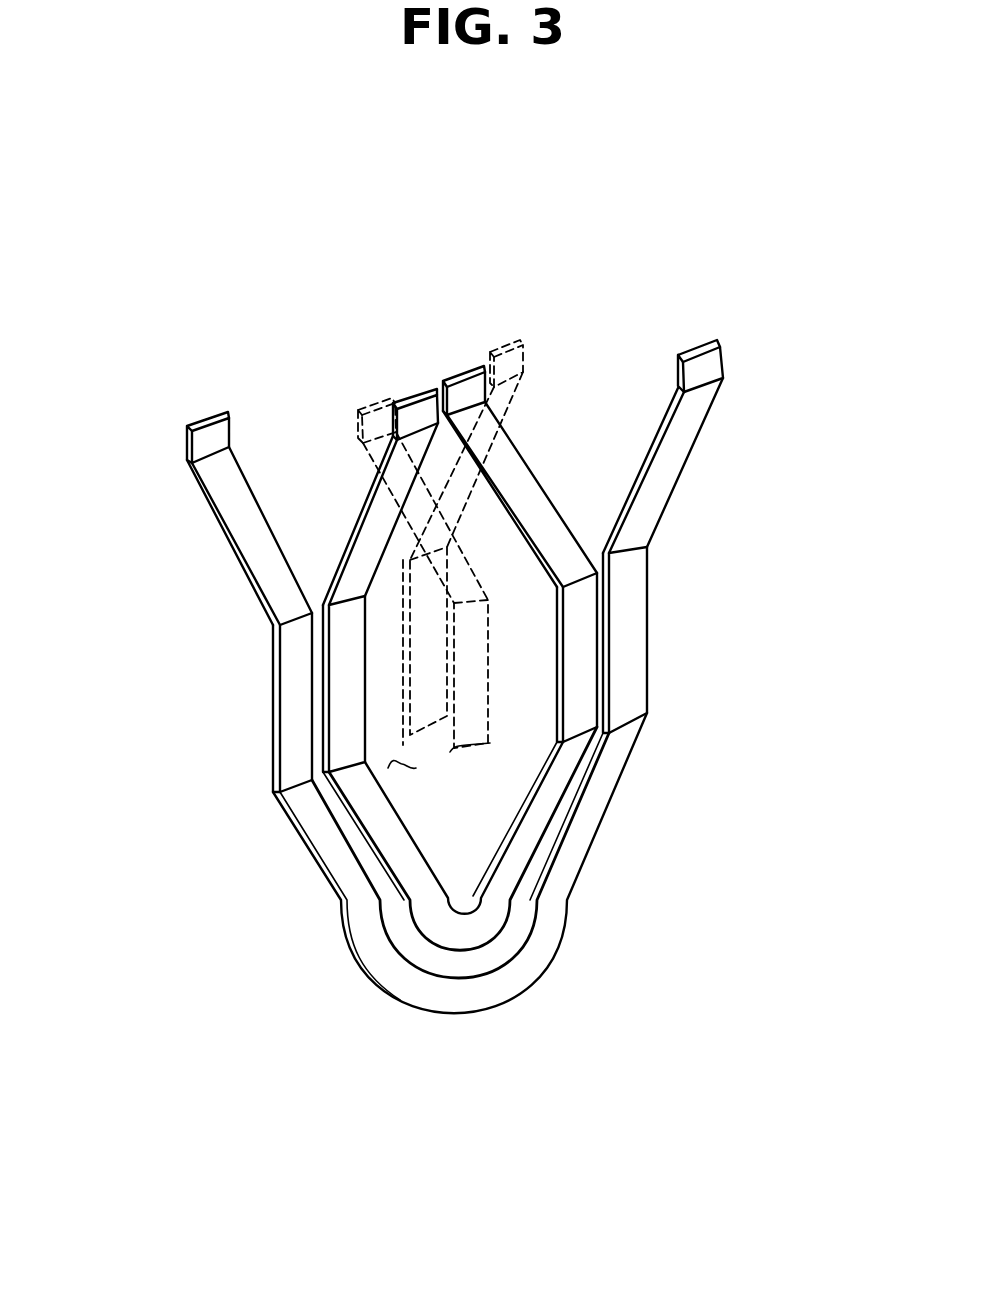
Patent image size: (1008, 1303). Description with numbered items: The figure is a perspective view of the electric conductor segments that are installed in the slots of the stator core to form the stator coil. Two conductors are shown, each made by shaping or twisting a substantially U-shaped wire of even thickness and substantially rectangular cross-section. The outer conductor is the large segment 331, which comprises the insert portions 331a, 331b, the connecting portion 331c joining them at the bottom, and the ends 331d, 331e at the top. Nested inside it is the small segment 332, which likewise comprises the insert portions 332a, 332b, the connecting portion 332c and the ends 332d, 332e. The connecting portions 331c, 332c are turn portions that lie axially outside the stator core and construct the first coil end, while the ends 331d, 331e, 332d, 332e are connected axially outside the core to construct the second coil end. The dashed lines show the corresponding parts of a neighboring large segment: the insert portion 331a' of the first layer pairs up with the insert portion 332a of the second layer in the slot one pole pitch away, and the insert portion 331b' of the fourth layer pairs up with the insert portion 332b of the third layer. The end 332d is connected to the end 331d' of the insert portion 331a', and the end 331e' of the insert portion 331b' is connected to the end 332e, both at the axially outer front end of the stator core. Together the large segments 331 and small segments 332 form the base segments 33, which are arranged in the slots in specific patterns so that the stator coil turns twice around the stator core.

The base segments 33 is at (353, 983).
The large segment 331 is at (690, 490).
The insert portion 331a is at (221, 697).
The insert portion 331b is at (717, 640).
The connecting portion 331c is at (450, 1000).
The end 331d is at (172, 518).
The end 331e is at (735, 420).
The insert portion 331a' is at (565, 671).
The insert portion 331b' is at (628, 663).
The end 331d' is at (351, 449).
The end 331e' is at (514, 421).
The small segment 332 is at (560, 497).
The insert portion 332a is at (343, 703).
The insert portion 332b is at (580, 713).
The connecting portion 332c is at (462, 935).
The end 332d is at (425, 393).
The end 332e is at (480, 368).